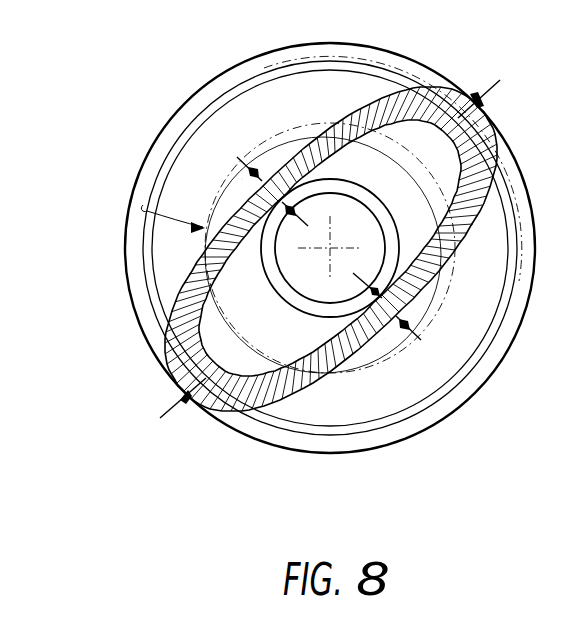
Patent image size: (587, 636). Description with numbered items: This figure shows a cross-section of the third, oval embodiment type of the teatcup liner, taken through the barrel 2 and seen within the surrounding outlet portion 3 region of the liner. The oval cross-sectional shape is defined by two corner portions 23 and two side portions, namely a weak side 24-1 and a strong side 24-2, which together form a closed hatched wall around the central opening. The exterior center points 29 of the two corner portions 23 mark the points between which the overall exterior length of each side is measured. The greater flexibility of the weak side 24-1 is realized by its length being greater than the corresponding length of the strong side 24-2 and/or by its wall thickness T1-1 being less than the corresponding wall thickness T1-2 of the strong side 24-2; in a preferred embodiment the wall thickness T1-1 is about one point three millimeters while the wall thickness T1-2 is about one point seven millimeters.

The barrel 2 is at (148, 197).
The outlet portion 3 is at (122, 253).
The corner portion 23 is at (190, 346).
The exterior center point 29 is at (490, 78).
The weak side 24-1 is at (383, 340).
The strong side 24-2 is at (241, 180).
The wall thickness of the weak side T1-1 is at (418, 325).
The wall thickness of the strong side T1-2 is at (244, 160).